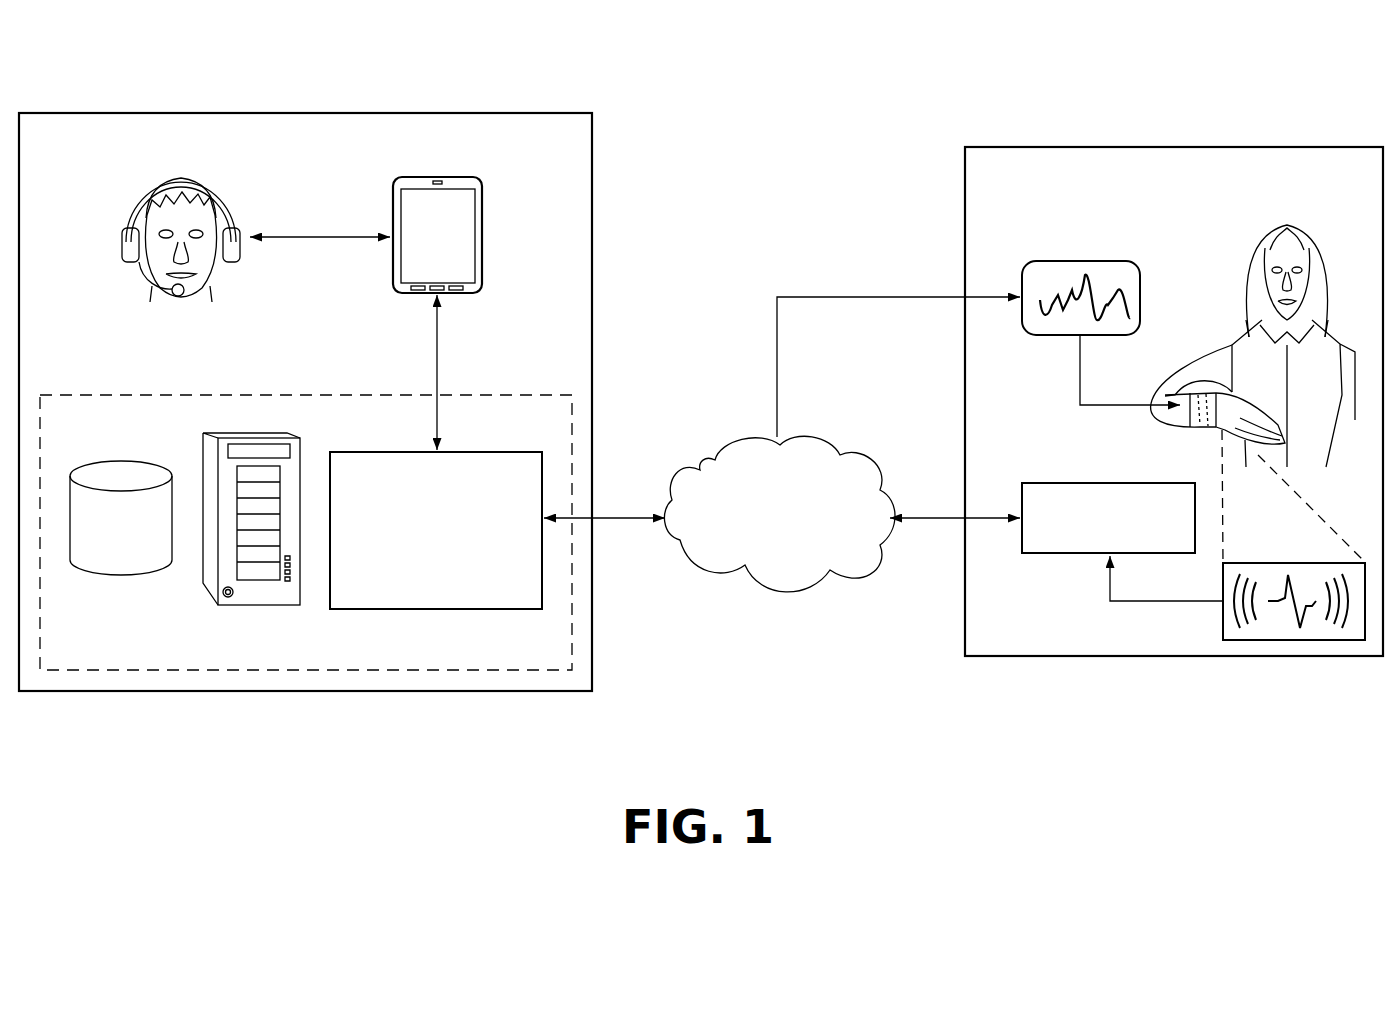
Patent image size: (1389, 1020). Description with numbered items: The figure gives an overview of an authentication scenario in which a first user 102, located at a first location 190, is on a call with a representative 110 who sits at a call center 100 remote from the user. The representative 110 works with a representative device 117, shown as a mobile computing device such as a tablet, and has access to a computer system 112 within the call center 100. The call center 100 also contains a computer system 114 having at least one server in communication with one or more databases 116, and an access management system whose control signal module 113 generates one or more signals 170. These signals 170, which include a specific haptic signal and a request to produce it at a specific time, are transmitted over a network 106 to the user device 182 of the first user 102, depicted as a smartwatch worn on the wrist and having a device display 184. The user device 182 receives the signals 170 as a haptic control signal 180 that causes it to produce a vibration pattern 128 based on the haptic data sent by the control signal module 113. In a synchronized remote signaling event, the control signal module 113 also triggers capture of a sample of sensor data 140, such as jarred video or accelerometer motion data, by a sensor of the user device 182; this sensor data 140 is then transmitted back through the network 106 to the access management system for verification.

The call center 100 is at (462, 113).
The representative 110 is at (180, 168).
The representative device 117 is at (483, 231).
The computer system 112 is at (305, 671).
The databases 116 is at (107, 576).
The computer system 114 is at (300, 442).
The control signal module 113 is at (490, 610).
The network 106 is at (772, 600).
The signals 170 is at (860, 252).
The first location 190 is at (1122, 147).
The haptic control signal 180 is at (1052, 336).
The first user 102 is at (1248, 262).
The user device 182 is at (1225, 400).
The device display 184 is at (1200, 390).
The sensor data 140 is at (1052, 554).
The vibration pattern 128 is at (1292, 641).